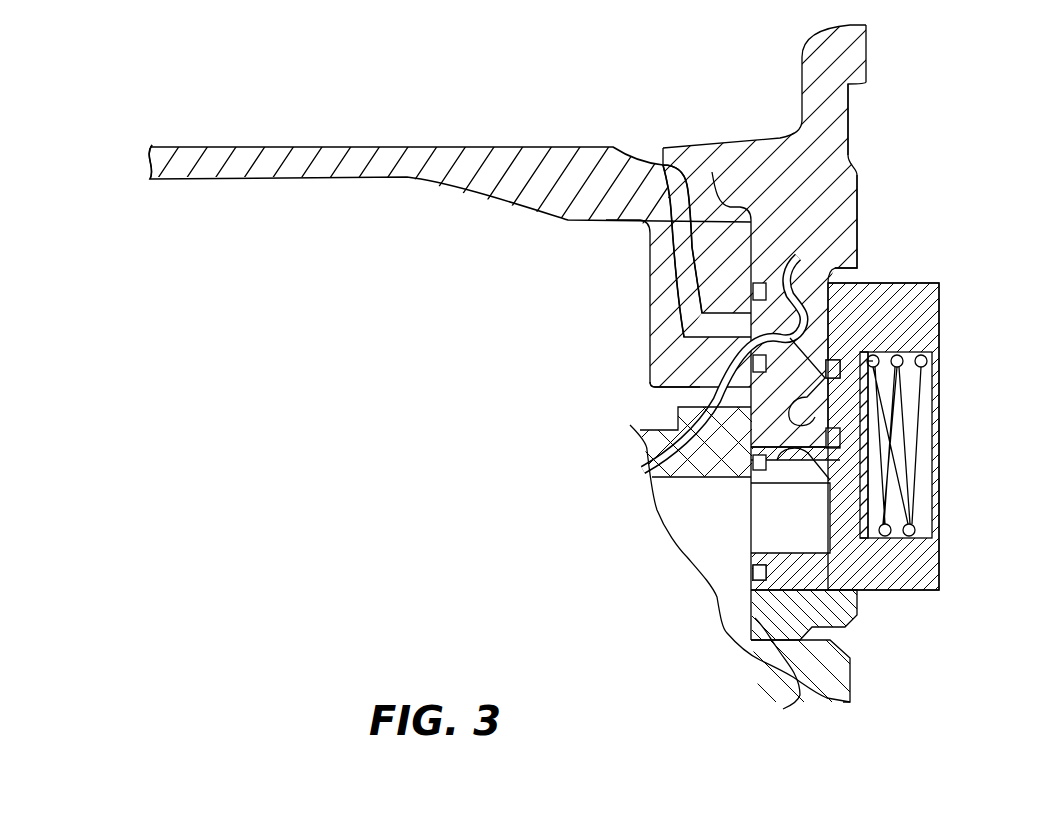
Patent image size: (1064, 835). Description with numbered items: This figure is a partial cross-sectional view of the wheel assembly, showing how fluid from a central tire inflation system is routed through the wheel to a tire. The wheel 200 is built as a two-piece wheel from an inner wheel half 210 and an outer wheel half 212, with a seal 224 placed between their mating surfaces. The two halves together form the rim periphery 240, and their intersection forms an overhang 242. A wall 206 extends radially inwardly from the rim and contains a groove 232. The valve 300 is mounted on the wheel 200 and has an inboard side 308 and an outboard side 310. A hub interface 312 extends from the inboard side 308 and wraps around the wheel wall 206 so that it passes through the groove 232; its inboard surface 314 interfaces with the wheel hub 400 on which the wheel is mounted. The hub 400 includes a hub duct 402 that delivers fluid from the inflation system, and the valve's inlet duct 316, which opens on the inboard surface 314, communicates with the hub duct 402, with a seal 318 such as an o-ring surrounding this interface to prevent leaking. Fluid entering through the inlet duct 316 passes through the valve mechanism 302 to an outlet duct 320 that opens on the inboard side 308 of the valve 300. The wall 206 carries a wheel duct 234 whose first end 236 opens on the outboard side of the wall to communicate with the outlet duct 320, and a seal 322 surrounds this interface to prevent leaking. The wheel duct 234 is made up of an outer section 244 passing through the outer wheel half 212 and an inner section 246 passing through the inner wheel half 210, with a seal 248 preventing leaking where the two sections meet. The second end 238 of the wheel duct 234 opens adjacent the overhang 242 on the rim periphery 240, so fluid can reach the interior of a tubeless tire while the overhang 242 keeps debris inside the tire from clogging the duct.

The wheel 200 is at (853, 68).
The wall 206 is at (850, 130).
The inner wheel half 210 is at (350, 122).
The outer wheel half 212 is at (721, 121).
The seal 224 is at (625, 222).
The groove 232 is at (858, 475).
The wheel duct 234 is at (790, 272).
The first end 236 is at (810, 413).
The second end 238 is at (677, 196).
The rim periphery 240 is at (188, 145).
The overhang 242 is at (680, 147).
The outer section 244 is at (833, 353).
The inner section 246 is at (688, 267).
The seal 248 is at (650, 380).
The valve 300 is at (972, 313).
The valve mechanism 302 is at (897, 430).
The inboard side 308 is at (858, 272).
The outboard side 310 is at (933, 560).
The hub interface 312 is at (783, 709).
The inboard surface 314 is at (747, 572).
The inlet duct 316 is at (837, 467).
The seal 318 is at (657, 510).
The outlet duct 320 is at (843, 403).
The seal 322 is at (747, 460).
The wheel hub 400 is at (853, 673).
The hub duct 402 is at (687, 537).